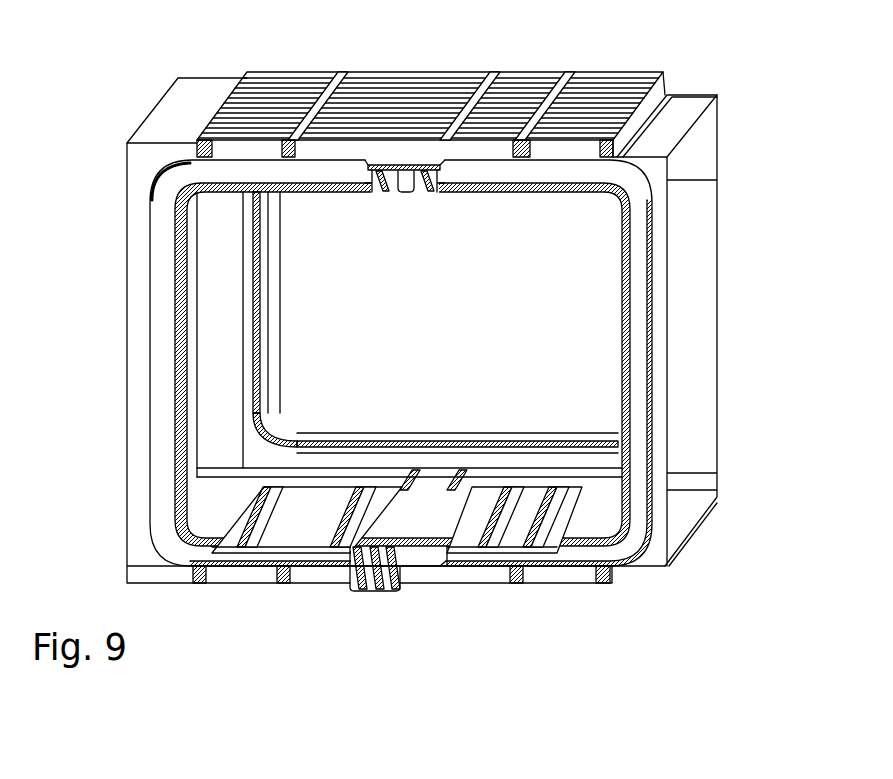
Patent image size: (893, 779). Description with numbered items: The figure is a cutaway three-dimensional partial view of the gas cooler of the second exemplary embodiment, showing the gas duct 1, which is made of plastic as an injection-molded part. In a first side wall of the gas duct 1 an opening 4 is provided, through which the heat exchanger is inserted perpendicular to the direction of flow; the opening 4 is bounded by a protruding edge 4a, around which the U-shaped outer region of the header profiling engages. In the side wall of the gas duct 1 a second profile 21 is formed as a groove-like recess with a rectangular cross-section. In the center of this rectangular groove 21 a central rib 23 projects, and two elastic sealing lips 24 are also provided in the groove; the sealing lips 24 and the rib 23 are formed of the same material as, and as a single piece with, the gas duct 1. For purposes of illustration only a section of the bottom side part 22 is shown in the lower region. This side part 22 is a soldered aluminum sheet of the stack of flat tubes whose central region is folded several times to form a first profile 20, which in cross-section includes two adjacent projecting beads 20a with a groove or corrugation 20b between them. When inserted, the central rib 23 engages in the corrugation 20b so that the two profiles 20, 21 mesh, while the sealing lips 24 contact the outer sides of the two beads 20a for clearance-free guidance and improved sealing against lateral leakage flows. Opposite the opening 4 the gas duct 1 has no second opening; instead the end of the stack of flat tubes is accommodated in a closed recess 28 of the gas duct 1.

The gas duct 1 is at (183, 107).
The opening 4 is at (595, 258).
The protruding edge 4a is at (648, 313).
The first profile 20 is at (335, 599).
The beads 20a is at (363, 582).
The corrugation 20b is at (375, 582).
The second profile 21 is at (368, 200).
The side part 22 is at (325, 530).
The central rib 23 is at (405, 177).
The sealing lips 24 is at (390, 173).
The closed recess 28 is at (556, 324).